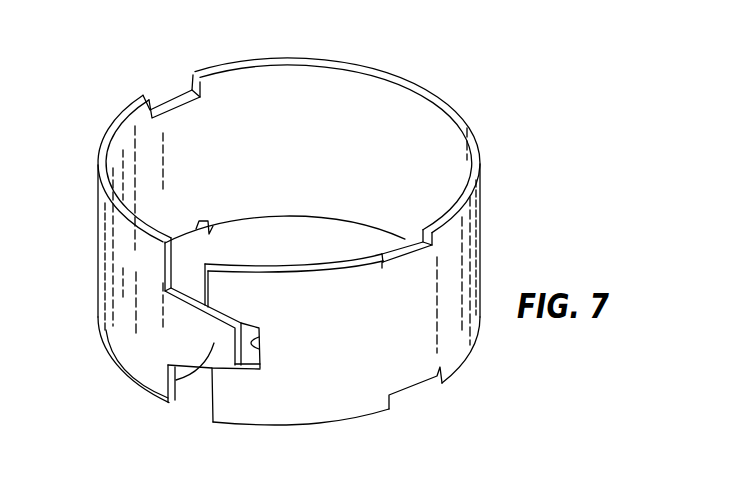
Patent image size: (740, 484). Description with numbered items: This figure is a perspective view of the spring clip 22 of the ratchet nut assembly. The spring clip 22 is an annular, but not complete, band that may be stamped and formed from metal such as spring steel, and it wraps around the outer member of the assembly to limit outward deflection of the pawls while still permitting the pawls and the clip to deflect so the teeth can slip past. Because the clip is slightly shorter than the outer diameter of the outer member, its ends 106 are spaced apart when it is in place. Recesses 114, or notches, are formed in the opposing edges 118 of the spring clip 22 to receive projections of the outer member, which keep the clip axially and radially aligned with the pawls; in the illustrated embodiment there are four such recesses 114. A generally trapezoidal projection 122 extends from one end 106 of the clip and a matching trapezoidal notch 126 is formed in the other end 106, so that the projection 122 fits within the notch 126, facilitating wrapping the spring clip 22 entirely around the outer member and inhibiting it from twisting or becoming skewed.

The spring clip 22 is at (443, 68).
The ends 106 is at (211, 407).
The recesses 114 is at (168, 105).
The opposing edges 118 is at (313, 60).
The projection 122 is at (200, 354).
The notch 126 is at (256, 347).